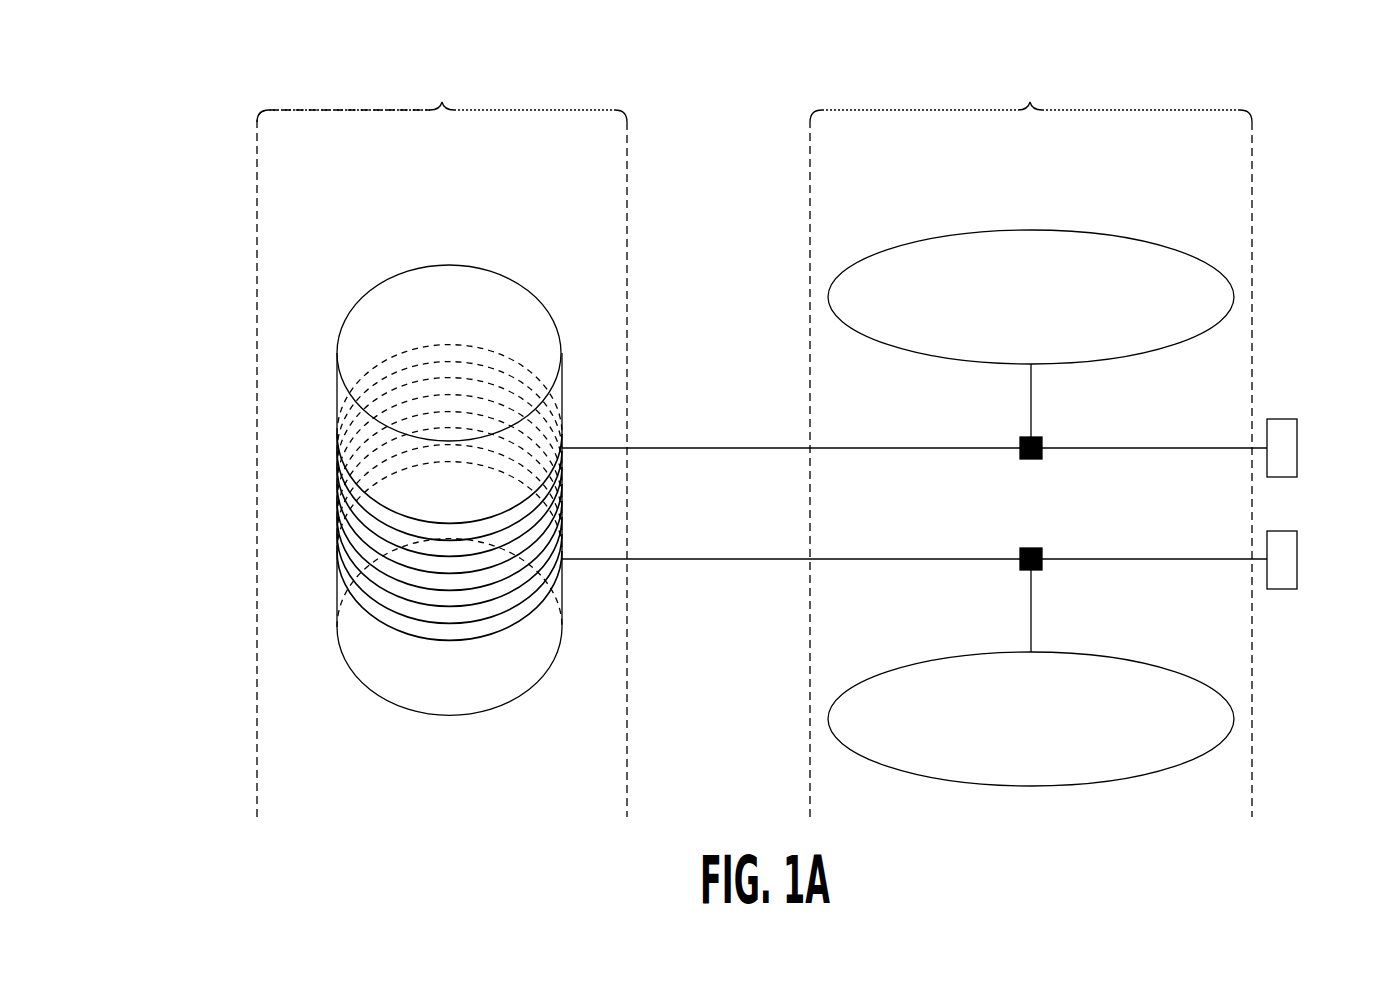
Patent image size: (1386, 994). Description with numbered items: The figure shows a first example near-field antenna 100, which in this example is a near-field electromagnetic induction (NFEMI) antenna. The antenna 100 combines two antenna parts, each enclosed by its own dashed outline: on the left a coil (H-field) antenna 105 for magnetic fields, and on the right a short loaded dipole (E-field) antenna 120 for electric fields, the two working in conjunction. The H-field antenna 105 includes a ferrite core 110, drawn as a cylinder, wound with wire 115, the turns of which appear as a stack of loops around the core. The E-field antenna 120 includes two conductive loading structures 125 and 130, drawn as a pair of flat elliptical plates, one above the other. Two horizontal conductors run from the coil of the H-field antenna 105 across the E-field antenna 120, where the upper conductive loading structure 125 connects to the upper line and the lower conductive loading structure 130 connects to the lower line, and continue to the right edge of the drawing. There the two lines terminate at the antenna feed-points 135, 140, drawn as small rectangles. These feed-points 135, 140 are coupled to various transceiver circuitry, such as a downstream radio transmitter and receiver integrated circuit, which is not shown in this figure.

The near-field antenna 100 is at (200, 120).
The coil (H-field) antenna 105 is at (442, 440).
The ferrite core 110 is at (477, 268).
The wire 115 is at (390, 634).
The short loaded dipole (E-field) antenna 120 is at (1031, 440).
The conductive loading structure 125 is at (1058, 230).
The conductive loading structure 130 is at (1082, 652).
The feed-point 135 is at (1290, 419).
The feed-point 140 is at (1287, 589).